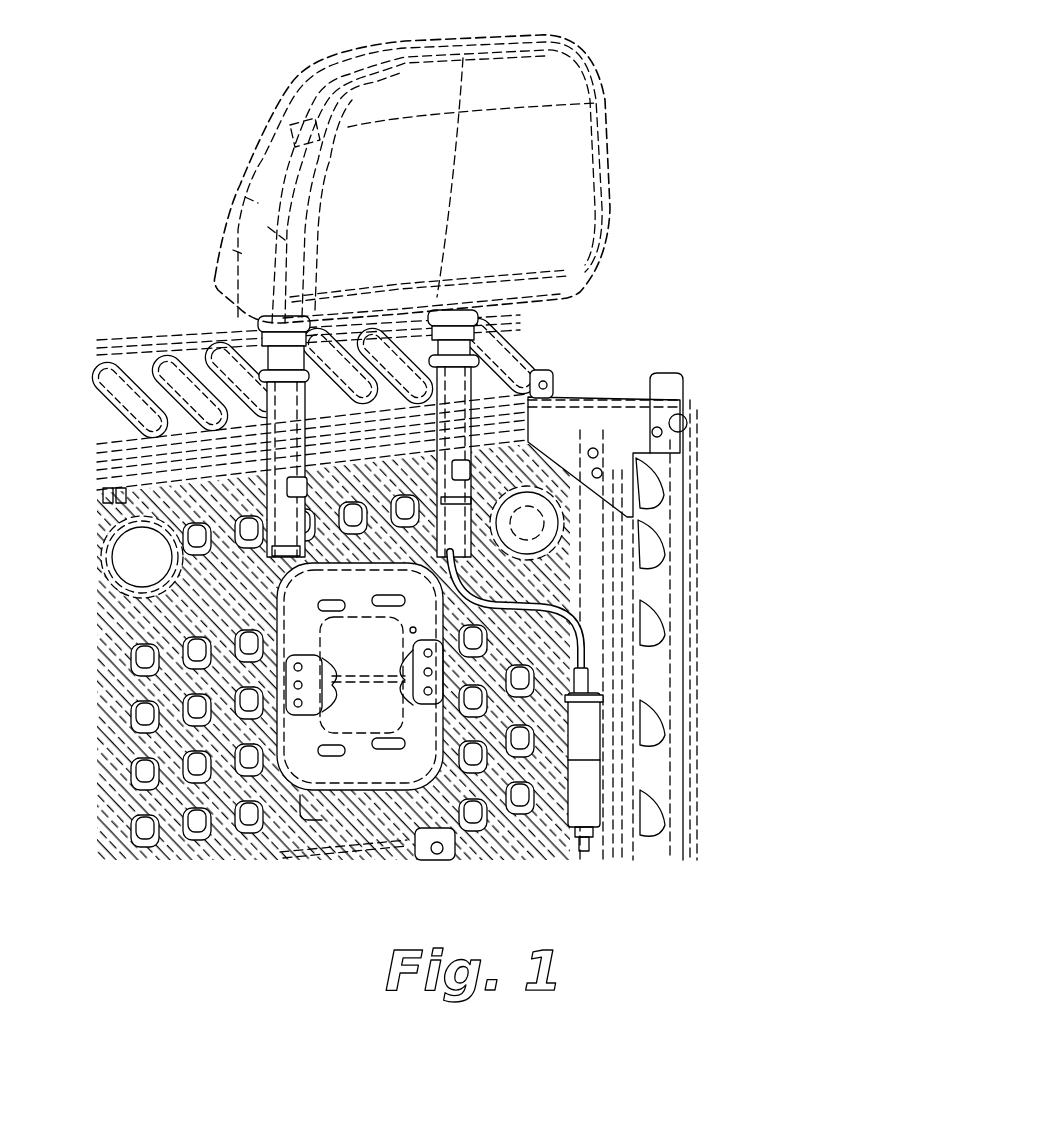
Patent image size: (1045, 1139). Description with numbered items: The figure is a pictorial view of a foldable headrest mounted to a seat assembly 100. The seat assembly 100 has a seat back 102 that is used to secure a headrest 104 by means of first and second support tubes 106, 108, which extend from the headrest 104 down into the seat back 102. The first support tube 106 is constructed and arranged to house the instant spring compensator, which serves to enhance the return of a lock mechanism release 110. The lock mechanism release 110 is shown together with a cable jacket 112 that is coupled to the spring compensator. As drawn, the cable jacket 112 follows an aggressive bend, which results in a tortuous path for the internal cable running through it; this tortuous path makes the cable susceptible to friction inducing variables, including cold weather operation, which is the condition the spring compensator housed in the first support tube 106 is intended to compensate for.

The seat assembly 100 is at (762, 243).
The seat back 102 is at (693, 628).
The headrest 104 is at (632, 125).
The first support tube 106 is at (480, 354).
The second support tube 108 is at (233, 342).
The lock mechanism release 110 is at (593, 730).
The cable jacket 112 is at (575, 620).